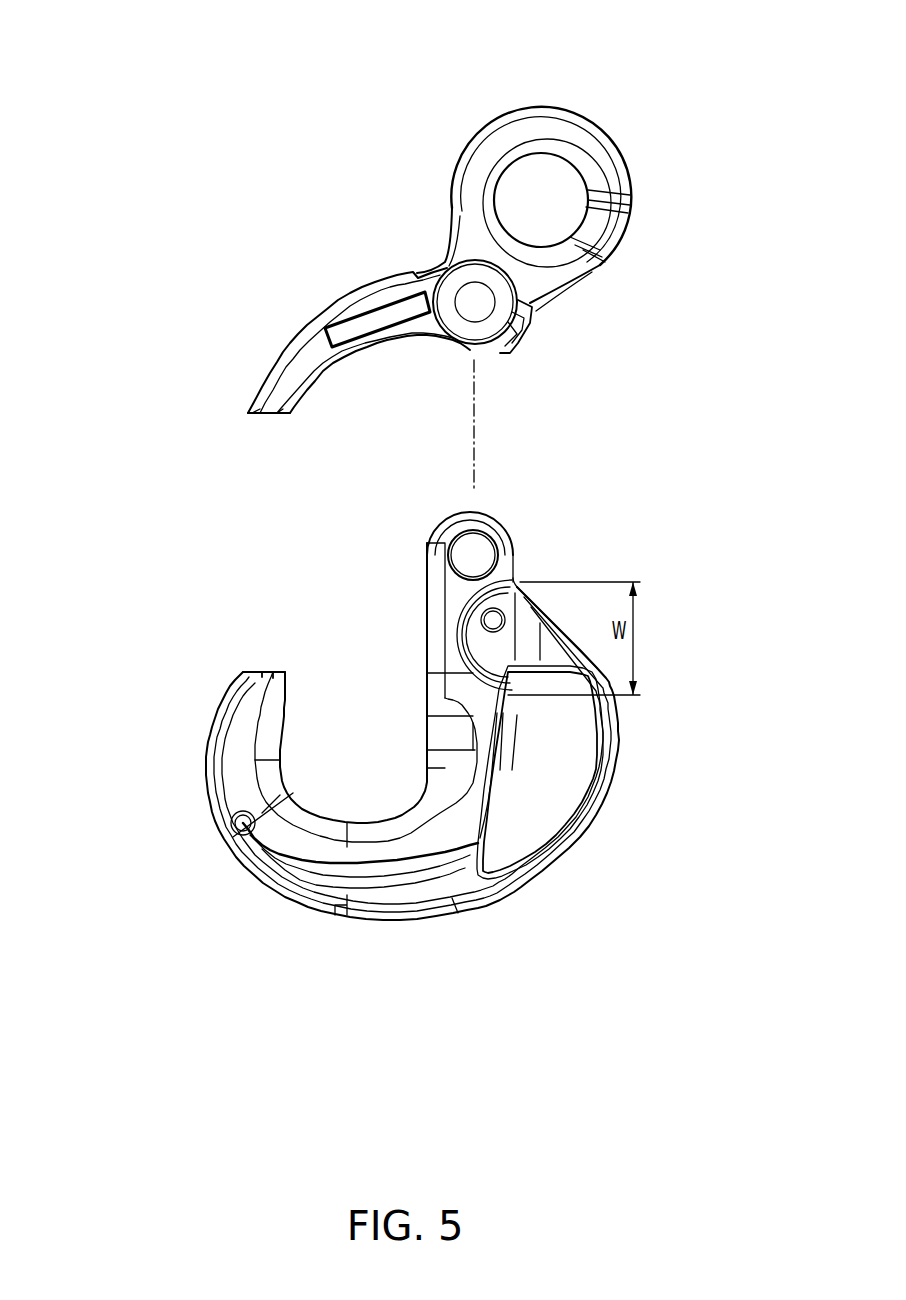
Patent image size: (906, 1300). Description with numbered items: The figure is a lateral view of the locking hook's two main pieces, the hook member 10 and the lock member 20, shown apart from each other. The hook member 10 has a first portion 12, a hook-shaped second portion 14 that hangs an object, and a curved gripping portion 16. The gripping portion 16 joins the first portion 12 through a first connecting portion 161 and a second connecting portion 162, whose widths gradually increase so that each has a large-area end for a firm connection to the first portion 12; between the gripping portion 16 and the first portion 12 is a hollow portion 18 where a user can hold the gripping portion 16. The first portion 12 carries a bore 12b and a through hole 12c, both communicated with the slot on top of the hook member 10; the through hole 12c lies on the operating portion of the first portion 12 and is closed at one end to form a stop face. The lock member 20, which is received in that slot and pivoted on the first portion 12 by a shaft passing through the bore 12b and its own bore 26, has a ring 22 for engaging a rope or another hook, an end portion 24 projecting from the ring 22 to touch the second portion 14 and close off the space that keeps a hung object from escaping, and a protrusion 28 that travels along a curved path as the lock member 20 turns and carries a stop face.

The hook member 10 is at (272, 902).
The first portion 12 is at (483, 768).
The bore 12b is at (473, 552).
The through hole 12c is at (490, 617).
The second portion 14 is at (233, 753).
The gripping portion 16 is at (585, 840).
The hollow portion 18 is at (563, 748).
The first connecting portion 161 is at (497, 650).
The second connecting portion 162 is at (452, 892).
The lock member 20 is at (488, 124).
The ring 22 is at (600, 158).
The end portion 24 is at (268, 385).
The bore 26 is at (475, 300).
The protrusion 28 is at (520, 343).